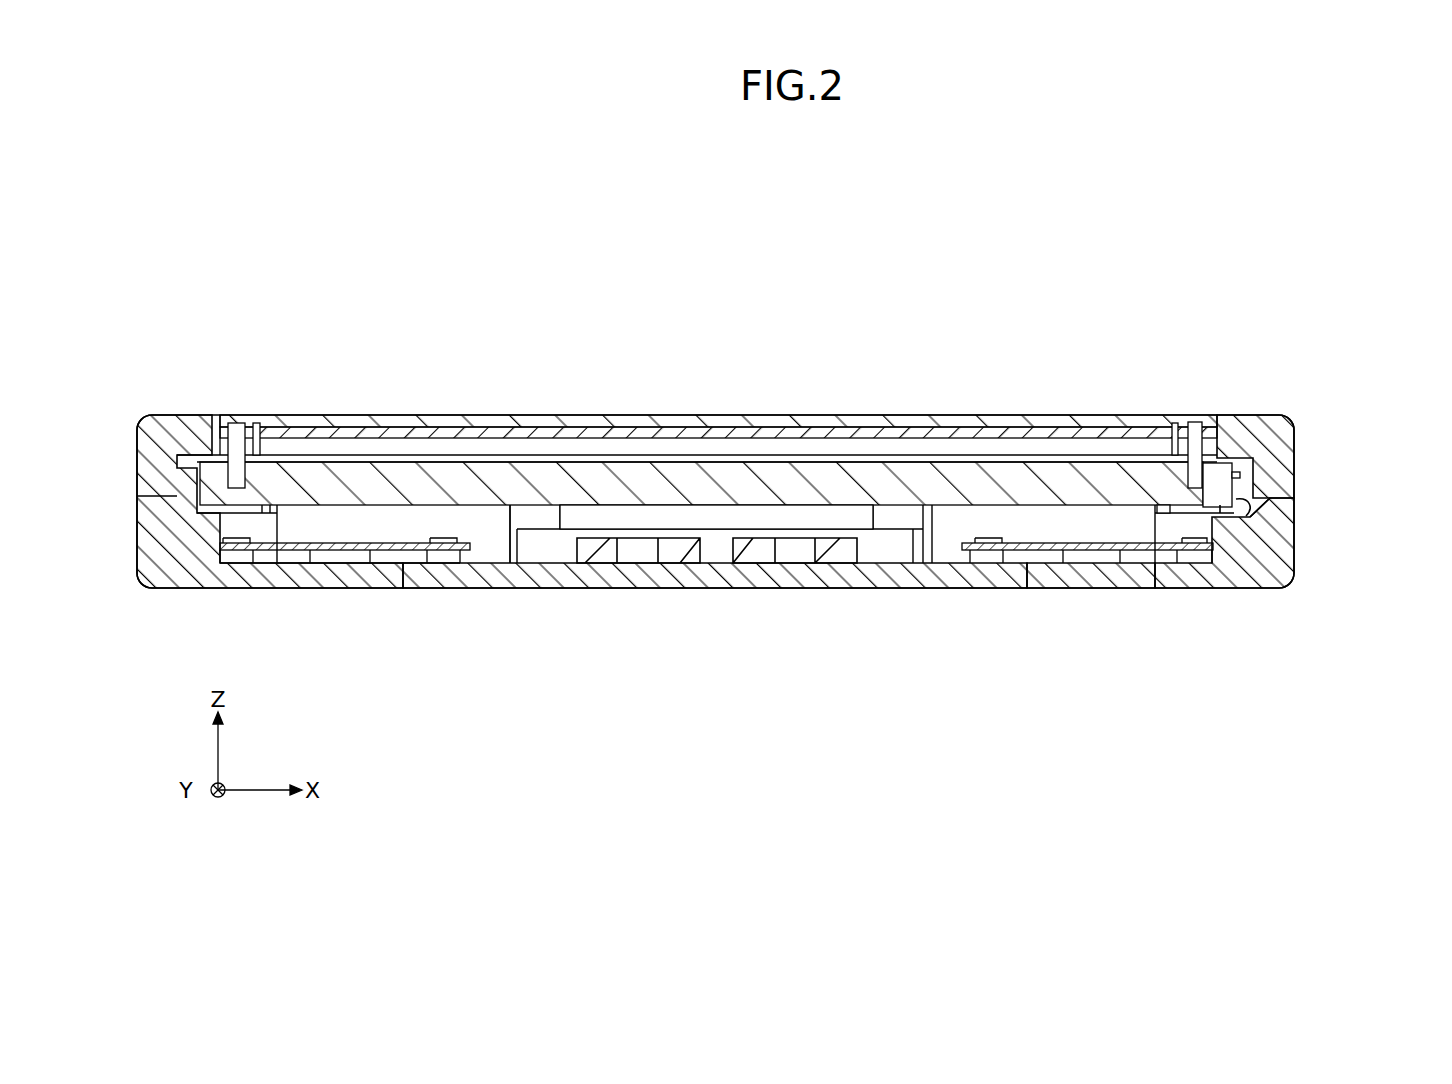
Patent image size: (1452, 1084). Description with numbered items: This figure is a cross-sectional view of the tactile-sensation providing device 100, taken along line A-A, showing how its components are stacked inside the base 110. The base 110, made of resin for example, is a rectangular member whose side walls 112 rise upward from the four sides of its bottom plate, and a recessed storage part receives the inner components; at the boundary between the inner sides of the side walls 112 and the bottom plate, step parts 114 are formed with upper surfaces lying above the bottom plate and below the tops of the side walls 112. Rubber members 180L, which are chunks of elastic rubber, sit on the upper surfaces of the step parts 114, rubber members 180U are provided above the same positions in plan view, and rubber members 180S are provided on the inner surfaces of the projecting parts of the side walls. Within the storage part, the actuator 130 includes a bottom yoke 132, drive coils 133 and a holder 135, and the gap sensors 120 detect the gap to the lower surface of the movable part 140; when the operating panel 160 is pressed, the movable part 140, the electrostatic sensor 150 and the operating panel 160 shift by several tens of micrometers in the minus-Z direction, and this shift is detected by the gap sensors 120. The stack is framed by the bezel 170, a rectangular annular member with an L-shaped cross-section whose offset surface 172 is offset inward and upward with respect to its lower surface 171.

The tactile-sensation providing device 100 is at (1232, 279).
The base 110 is at (1288, 548).
The side walls 112 is at (162, 572).
The step parts 114 is at (1260, 505).
The gap sensors 120 is at (1125, 548).
The actuator 130 is at (932, 533).
The bottom yoke 132 is at (513, 547).
The drive coils 133 is at (760, 548).
The holder 135 is at (715, 517).
The movable part 140 is at (870, 468).
The electrostatic sensor 150 is at (993, 430).
The operating panel 160 is at (1075, 418).
The bezel 170 is at (1270, 447).
The lower surface 171 is at (1242, 502).
The offset surface 172 is at (1218, 453).
The rubber members 180U is at (1168, 455).
The rubber members 180L is at (1165, 512).
The rubber members 180S is at (1240, 475).